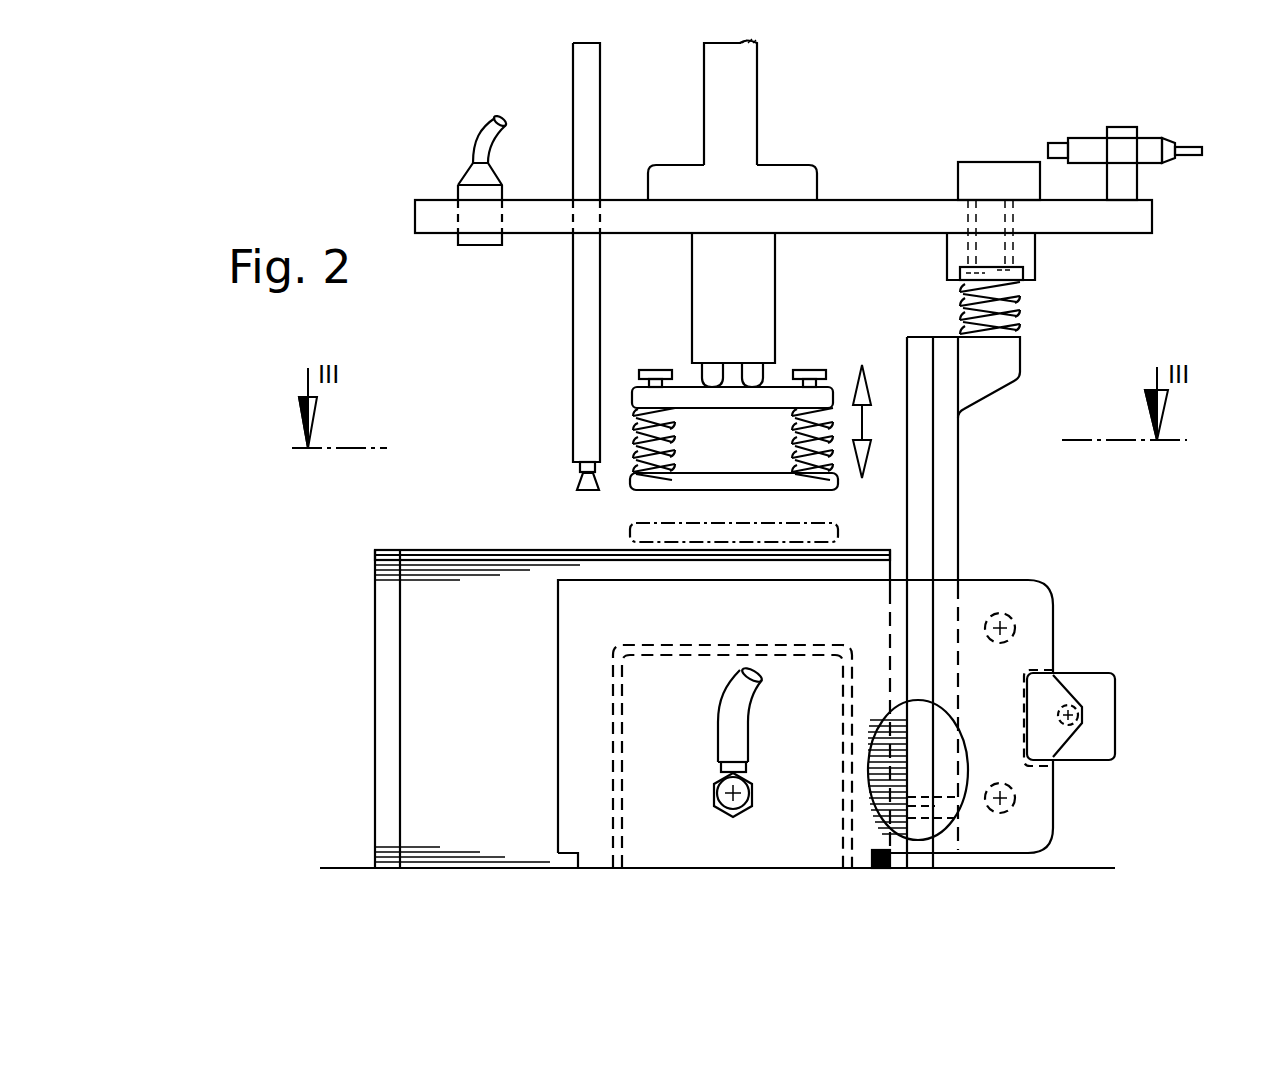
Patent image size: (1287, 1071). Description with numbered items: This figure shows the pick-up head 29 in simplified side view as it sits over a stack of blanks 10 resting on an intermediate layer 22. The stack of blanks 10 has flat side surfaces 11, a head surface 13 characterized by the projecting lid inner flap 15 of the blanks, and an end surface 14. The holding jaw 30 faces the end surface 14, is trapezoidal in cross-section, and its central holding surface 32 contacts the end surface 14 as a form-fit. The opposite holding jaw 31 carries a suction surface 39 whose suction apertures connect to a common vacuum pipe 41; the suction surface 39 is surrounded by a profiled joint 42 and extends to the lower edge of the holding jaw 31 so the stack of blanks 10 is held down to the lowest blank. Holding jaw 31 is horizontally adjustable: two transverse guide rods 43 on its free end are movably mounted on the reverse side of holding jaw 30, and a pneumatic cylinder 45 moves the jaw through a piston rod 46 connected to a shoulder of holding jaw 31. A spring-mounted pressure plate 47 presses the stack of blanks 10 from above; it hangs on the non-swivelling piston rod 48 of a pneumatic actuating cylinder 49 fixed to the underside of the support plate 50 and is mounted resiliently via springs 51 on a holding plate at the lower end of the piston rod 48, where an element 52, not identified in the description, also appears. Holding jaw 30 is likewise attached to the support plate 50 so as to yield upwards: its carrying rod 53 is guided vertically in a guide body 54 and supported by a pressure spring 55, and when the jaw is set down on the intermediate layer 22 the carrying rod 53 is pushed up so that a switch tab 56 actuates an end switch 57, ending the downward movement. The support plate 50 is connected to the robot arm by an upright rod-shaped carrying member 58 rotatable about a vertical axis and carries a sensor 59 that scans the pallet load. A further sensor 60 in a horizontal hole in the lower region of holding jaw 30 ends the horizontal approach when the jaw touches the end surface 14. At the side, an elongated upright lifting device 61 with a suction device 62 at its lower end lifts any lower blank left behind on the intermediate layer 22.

The stack of blanks 10 is at (342, 638).
The side surface 11 is at (487, 672).
The head surface 13 is at (372, 688).
The end surface 14 is at (912, 565).
The lid inner flap 15 is at (390, 552).
The intermediate layer 22 is at (347, 868).
The pick-up head 29 is at (1240, 112).
The holding jaw 30 is at (1005, 518).
The holding jaw 31 is at (516, 722).
The central holding surface 32 is at (920, 732).
The suction surface 39 is at (688, 817).
The vacuum pipe 41 is at (753, 713).
The profiled joint 42 is at (622, 805).
The transverse guide rods 43 is at (1018, 628).
The pneumatic cylinder 45 is at (1105, 740).
The piston rod 46 is at (1080, 715).
The pressure plate 47 is at (673, 482).
The piston rod 48 is at (770, 385).
The pneumatic actuating cylinder 49 is at (765, 280).
The support plate 50 is at (1140, 210).
The springs 51 is at (633, 433).
The guide screw 52 is at (632, 396).
The carrying rod 53 is at (998, 250).
The guide body 54 is at (1027, 265).
The pressure spring 55 is at (1018, 315).
The switch tab 56 is at (978, 172).
The end switch 57 is at (1083, 148).
The carrying member 58 is at (743, 98).
The sensor 59 is at (458, 195).
The sensor 60 is at (930, 808).
The lifting device 61 is at (602, 112).
The suction device 62 is at (582, 488).